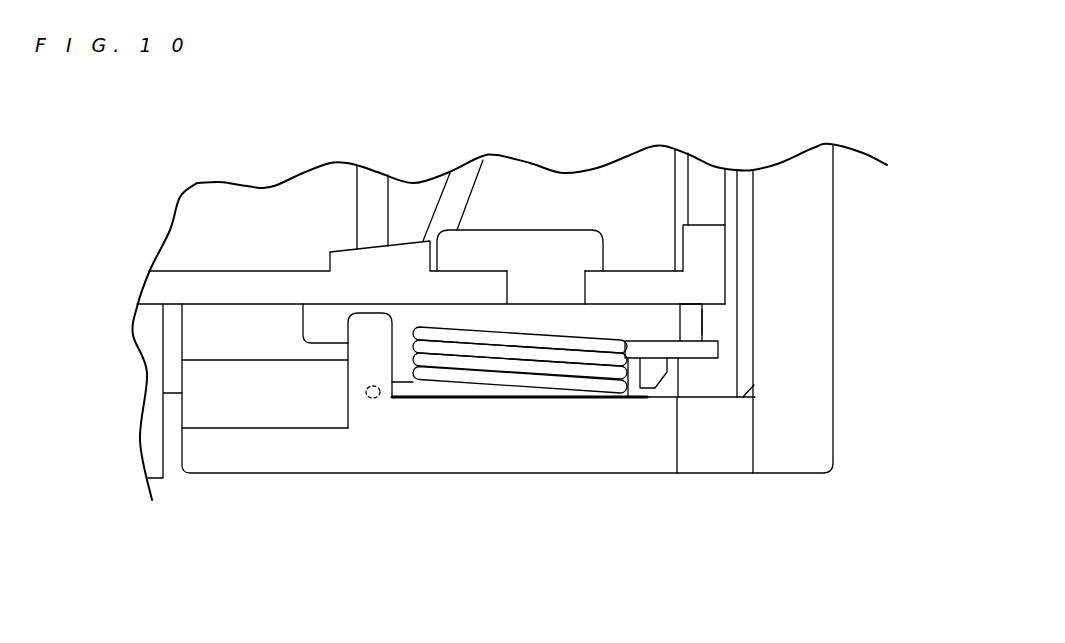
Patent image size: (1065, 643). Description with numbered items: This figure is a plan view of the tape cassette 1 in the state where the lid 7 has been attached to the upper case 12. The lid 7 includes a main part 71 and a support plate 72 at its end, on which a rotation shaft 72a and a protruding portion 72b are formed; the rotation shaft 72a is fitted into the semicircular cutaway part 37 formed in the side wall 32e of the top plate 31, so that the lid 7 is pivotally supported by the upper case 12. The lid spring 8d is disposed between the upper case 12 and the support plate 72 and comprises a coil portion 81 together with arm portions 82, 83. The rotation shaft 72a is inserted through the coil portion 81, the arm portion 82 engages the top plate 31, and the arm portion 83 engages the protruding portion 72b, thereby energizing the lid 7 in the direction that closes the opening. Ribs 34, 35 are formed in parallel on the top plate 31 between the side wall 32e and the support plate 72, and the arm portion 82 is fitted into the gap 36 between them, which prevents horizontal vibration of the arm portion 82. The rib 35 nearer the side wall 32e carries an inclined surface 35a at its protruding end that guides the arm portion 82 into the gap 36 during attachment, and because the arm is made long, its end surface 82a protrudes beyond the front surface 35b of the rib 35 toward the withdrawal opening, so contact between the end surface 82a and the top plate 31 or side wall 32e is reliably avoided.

The apparatus 1 is at (481, 90).
The lid 7 is at (853, 323).
The upper case 12 is at (293, 478).
The top plate 31 is at (650, 180).
The side wall 32e is at (258, 283).
The rib 34 is at (687, 378).
The rib 35 is at (698, 328).
The inclined surface 35a is at (689, 313).
The front surface 35b is at (704, 318).
The gap 36 is at (675, 339).
The cutaway part 37 is at (565, 269).
The main part 71 is at (815, 277).
The support plate 72 is at (572, 432).
The rotation shaft 72a is at (528, 250).
The protruding portion 72b is at (365, 332).
The coil portion 81 is at (523, 380).
The arm portion 82 is at (658, 349).
The end surface 82a is at (720, 352).
The arm portion 83 is at (413, 390).
The lid spring 8d is at (469, 400).